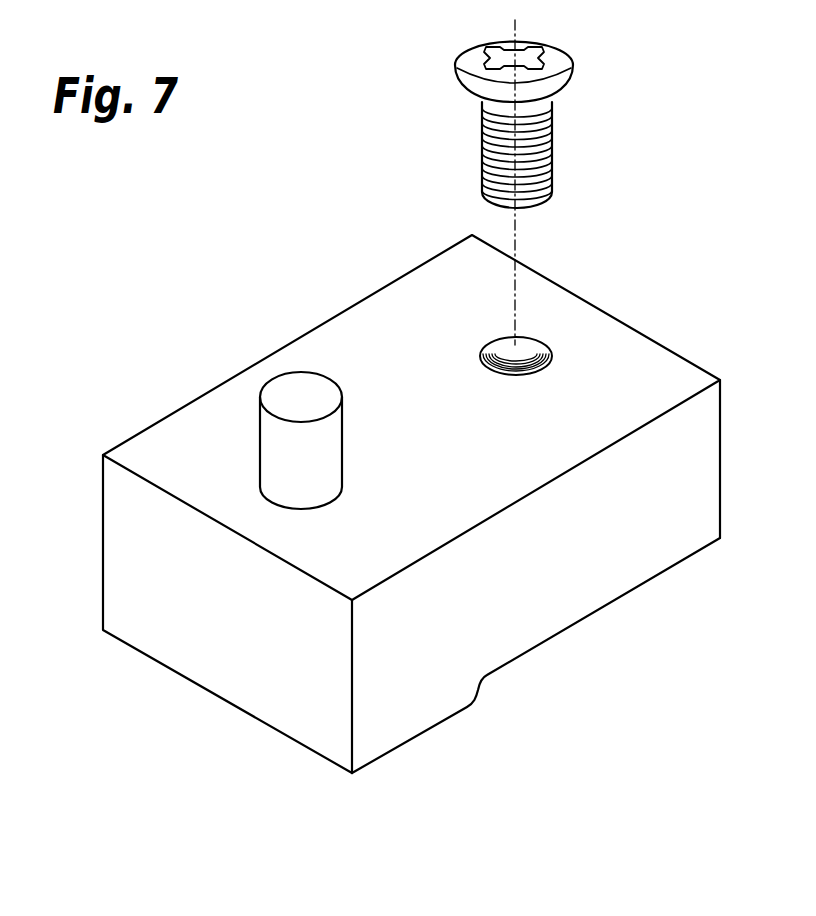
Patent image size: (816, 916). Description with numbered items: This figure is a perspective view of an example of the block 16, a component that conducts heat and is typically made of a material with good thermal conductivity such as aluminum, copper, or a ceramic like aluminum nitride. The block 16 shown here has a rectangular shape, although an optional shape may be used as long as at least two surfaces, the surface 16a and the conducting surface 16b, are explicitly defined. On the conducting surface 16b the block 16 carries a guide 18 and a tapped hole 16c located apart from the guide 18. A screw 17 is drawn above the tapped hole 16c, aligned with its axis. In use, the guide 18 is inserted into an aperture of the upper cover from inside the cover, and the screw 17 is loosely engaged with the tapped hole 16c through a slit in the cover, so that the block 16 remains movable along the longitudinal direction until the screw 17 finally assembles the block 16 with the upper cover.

The block 16 is at (303, 768).
The surface 16a is at (190, 638).
The conducting surface 16b is at (207, 430).
The tapped hole 16c is at (533, 350).
The screw 17 is at (555, 132).
The guide 18 is at (291, 385).